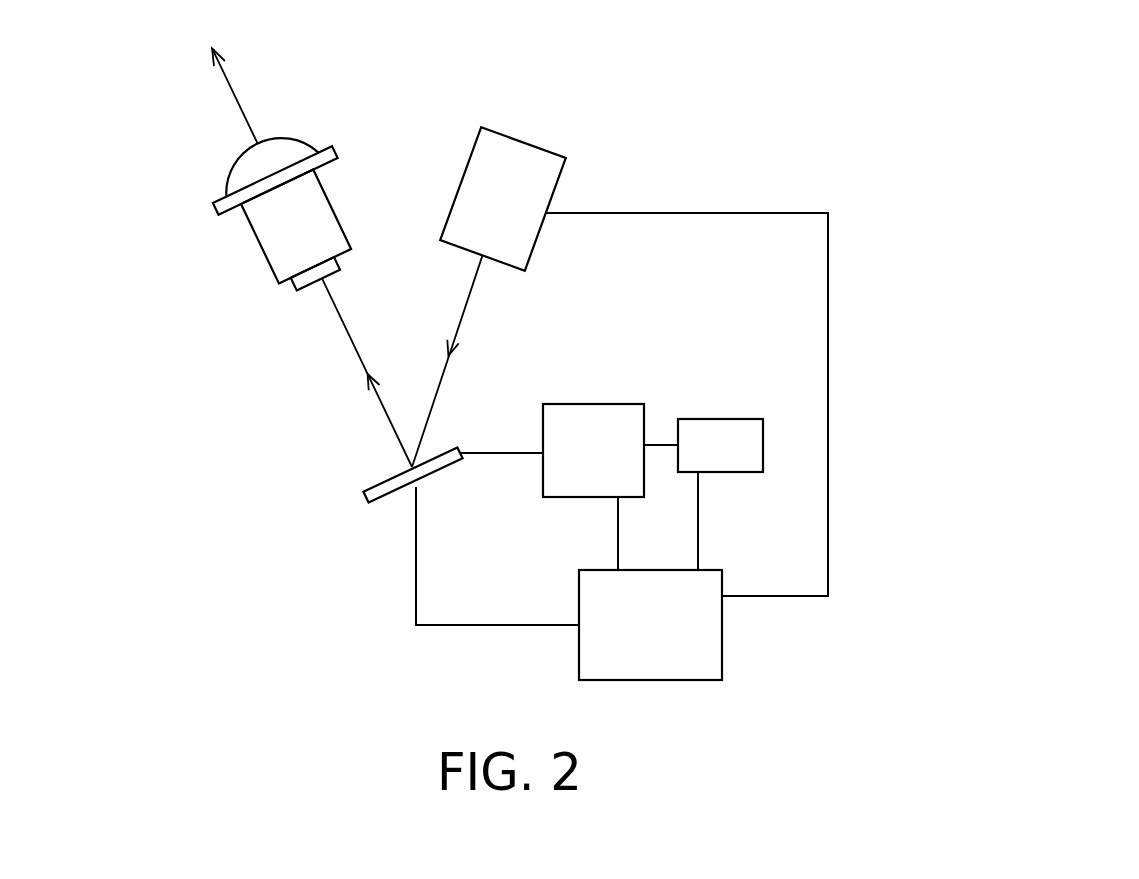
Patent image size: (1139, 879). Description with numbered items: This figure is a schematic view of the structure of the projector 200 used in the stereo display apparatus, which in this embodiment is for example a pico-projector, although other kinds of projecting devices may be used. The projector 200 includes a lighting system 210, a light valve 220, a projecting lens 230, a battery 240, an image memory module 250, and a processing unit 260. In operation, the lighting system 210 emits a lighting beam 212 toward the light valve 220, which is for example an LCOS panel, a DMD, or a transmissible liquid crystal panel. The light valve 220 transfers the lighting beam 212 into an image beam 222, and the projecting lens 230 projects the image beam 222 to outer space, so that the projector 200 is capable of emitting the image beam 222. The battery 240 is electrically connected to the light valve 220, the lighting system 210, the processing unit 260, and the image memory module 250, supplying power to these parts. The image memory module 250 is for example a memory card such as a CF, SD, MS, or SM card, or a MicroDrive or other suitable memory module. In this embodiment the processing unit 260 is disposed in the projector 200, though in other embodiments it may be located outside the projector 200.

The projector 200 is at (1110, 723).
The lighting system 210 is at (523, 141).
The lighting beam 212 is at (466, 300).
The light valve 220 is at (386, 494).
The image beam 222 is at (237, 102).
The projecting lens 230 is at (275, 230).
The battery 240 is at (723, 647).
The image memory module 250 is at (763, 447).
The processing unit 260 is at (595, 403).